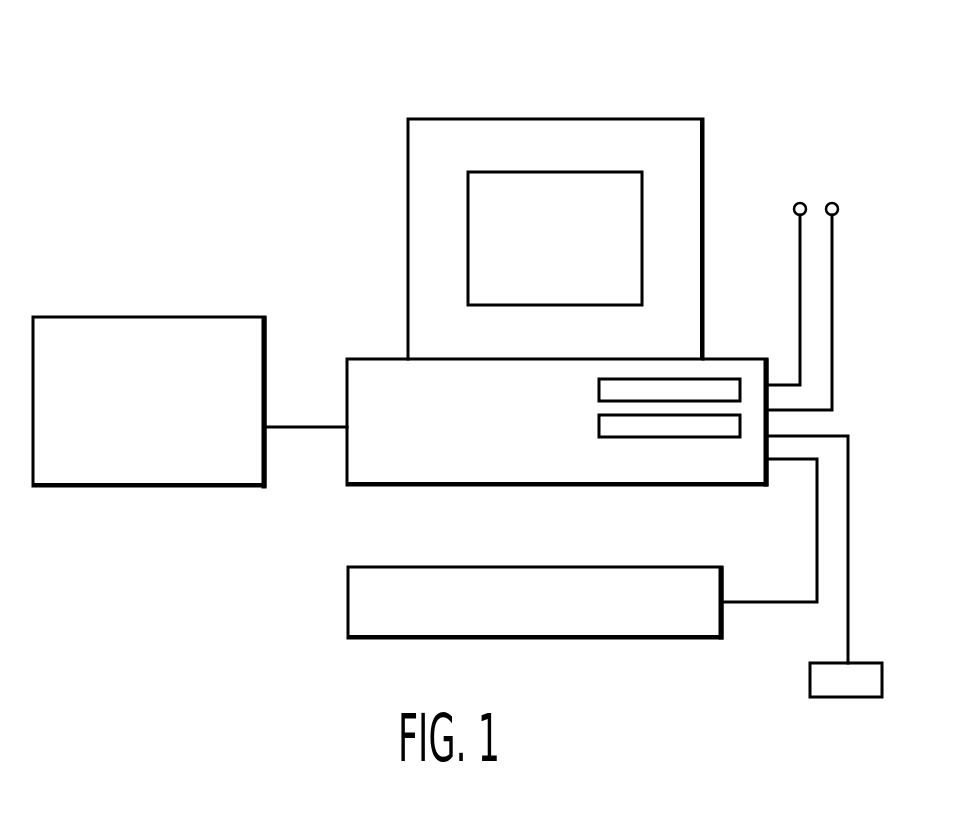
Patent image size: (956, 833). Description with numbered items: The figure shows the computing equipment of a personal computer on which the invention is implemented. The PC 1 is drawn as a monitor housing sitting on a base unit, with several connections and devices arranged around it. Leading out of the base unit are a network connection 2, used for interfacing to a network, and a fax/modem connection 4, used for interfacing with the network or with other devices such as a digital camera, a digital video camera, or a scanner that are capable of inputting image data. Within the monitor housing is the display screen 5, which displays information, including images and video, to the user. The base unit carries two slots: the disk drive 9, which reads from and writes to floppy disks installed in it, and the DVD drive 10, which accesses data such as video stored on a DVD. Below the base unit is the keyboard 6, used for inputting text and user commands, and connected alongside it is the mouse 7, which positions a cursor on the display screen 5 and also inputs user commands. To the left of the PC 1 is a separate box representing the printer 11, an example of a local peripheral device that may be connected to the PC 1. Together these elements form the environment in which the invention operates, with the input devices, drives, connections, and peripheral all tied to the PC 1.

The PC 1 is at (432, 73).
The network connection 2 is at (800, 267).
The fax/modem connection 4 is at (832, 294).
The display screen 5 is at (576, 176).
The keyboard 6 is at (348, 598).
The mouse 7 is at (810, 677).
The disk drive 9 is at (599, 385).
The DVD drive 10 is at (599, 422).
The printer 11 is at (173, 323).